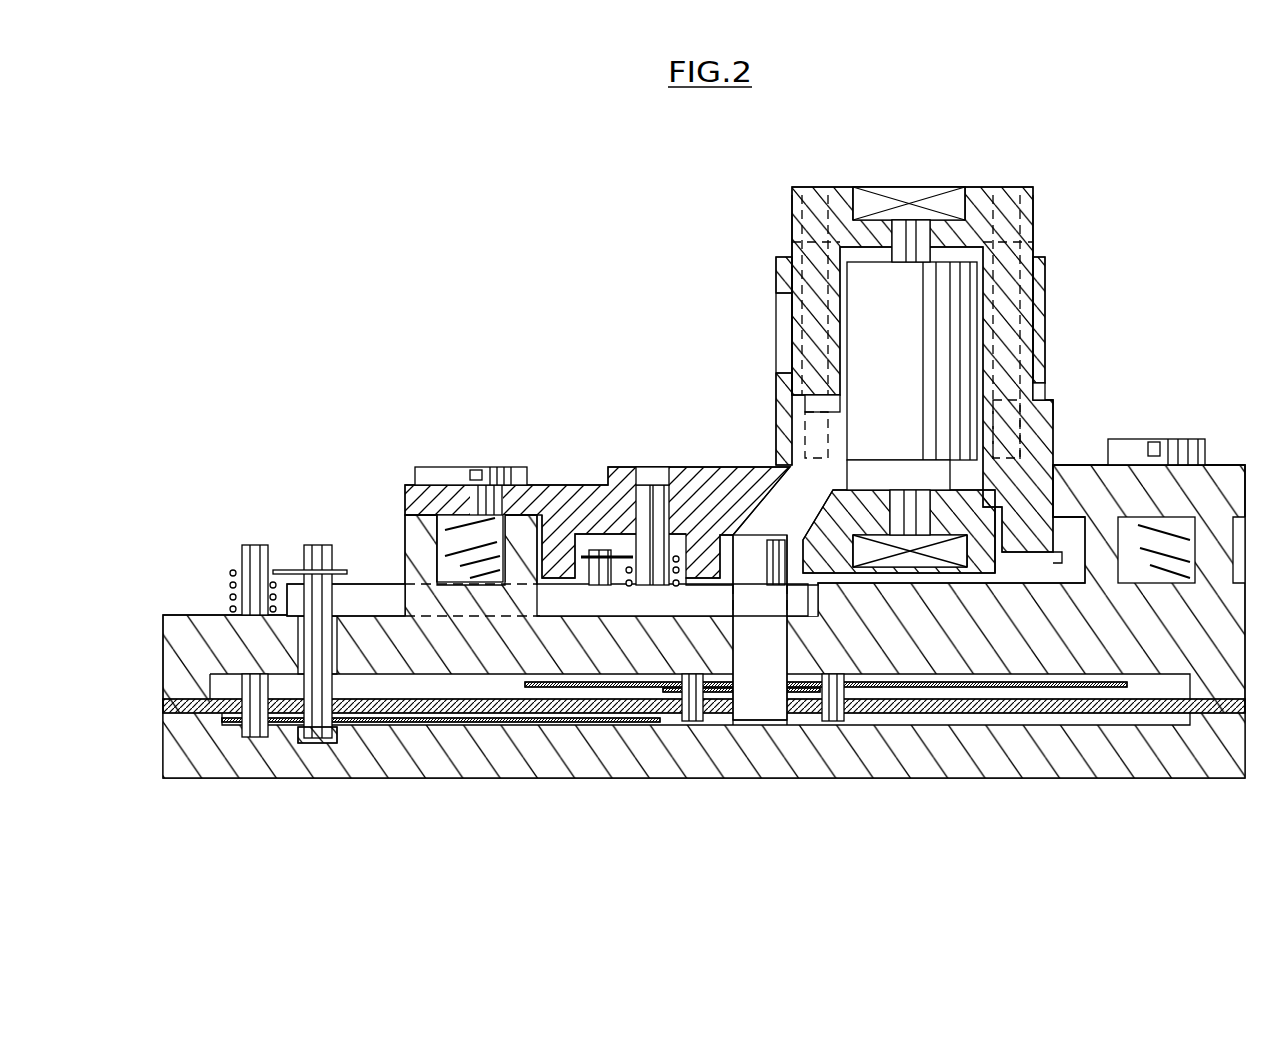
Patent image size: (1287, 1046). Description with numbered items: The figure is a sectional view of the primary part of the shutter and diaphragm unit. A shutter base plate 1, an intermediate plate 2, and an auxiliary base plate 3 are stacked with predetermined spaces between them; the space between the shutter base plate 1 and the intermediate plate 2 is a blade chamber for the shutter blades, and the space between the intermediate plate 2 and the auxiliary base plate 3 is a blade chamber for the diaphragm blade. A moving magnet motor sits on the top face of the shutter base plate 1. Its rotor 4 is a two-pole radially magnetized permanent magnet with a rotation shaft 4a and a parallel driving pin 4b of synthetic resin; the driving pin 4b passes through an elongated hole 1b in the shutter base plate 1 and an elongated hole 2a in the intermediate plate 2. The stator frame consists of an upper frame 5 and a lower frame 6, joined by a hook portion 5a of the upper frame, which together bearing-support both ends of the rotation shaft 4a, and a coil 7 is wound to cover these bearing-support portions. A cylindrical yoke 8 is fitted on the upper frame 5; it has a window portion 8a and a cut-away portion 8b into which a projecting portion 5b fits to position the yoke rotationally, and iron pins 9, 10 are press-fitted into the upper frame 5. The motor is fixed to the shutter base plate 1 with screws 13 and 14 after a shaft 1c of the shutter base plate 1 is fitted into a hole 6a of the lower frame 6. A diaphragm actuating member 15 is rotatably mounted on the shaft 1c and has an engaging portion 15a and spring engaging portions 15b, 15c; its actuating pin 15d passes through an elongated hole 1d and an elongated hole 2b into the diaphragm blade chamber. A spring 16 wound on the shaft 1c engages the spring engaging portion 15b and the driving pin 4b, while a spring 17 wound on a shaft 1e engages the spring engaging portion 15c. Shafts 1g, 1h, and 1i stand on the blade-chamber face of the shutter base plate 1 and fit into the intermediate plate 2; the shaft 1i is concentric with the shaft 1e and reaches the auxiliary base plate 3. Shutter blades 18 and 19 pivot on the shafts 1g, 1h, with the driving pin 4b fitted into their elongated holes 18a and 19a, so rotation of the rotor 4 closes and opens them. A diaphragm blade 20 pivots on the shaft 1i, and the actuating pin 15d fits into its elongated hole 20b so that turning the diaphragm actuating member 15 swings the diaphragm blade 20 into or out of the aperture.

The shutter base plate 1 is at (192, 630).
The elongated hole 1b is at (732, 655).
The shaft 1c is at (650, 497).
The elongated hole 1d is at (345, 745).
The shaft 1e is at (248, 560).
The shaft 1g is at (832, 722).
The shaft 1h is at (690, 722).
The shaft 1i is at (245, 740).
The intermediate plate 2 is at (372, 714).
The elongated hole 2a is at (723, 716).
The elongated hole 2b is at (322, 740).
The auxiliary base plate 3 is at (215, 770).
The rotor 4 is at (950, 350).
The rotation shaft 4a is at (905, 262).
The driving pin 4b is at (747, 716).
The upper frame 5 is at (1023, 212).
The hook portion 5a is at (1050, 560).
The projecting portion 5b is at (1053, 420).
The lower frame 6 is at (1232, 480).
The hole 6a is at (660, 475).
The coil 7 is at (905, 190).
The cylindrical yoke 8 is at (1047, 278).
The window portion 8a is at (780, 315).
The cut-away portion 8b is at (1042, 390).
The iron pin 9 is at (792, 243).
The iron pin 10 is at (1040, 238).
The screw 13 is at (462, 467).
The screw 14 is at (1177, 440).
The diaphragm actuating member 15 is at (372, 597).
The engaging portion 15a is at (900, 675).
The spring engaging portion 15b is at (590, 553).
The spring engaging portion 15c is at (313, 548).
The actuating pin 15d is at (300, 745).
The spring 16 is at (612, 553).
The spring 17 is at (288, 568).
The shutter blade 18 is at (492, 688).
The elongated hole 18a is at (800, 695).
The shutter blade 19 is at (1072, 690).
The elongated hole 19a is at (712, 712).
The diaphragm blade 20 is at (430, 724).
The elongated hole 20b is at (283, 735).